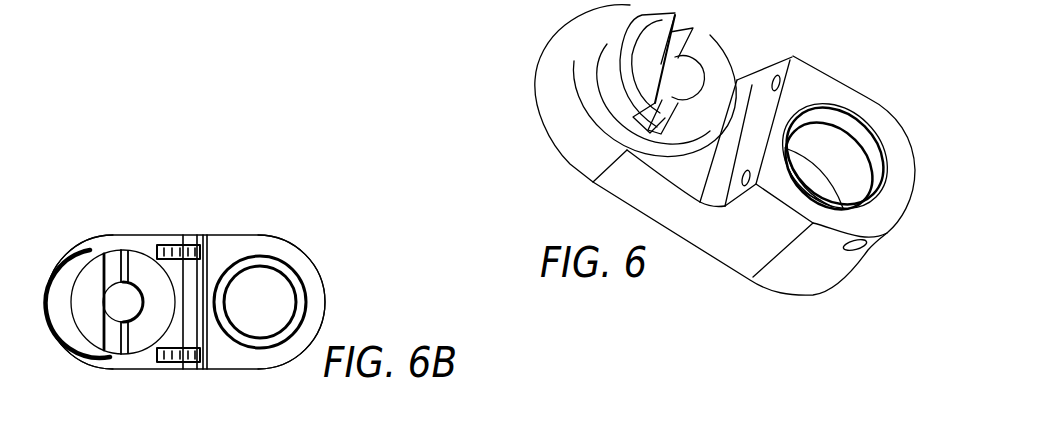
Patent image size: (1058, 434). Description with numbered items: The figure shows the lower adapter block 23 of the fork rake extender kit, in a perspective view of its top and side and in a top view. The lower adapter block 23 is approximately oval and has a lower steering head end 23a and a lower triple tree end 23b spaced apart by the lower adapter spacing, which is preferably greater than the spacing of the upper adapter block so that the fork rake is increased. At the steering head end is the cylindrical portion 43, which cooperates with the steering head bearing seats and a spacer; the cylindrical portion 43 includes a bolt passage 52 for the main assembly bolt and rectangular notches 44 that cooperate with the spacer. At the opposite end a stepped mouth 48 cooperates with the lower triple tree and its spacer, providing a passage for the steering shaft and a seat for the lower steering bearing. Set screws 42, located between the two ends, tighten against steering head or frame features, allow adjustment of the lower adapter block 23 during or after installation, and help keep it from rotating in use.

In FIG. 6B, the lower adapter block 23 is at (360, 208).
In FIG. 6, the lower adapter block 23 is at (520, 70).
In FIG. 6B, the lower steering head end 23a is at (63, 310).
In FIG. 6B, the lower triple tree end 23b is at (315, 305).
In FIG. 6B, the set screws 42 is at (173, 250).
In FIG. 6B, the cylindrical portion 43 is at (83, 335).
In FIG. 6B, the rectangular notches 44 is at (116, 265).
In FIG. 6B, the stepped mouth 48 is at (262, 297).
In FIG. 6B, the bolt passage 52 is at (107, 297).